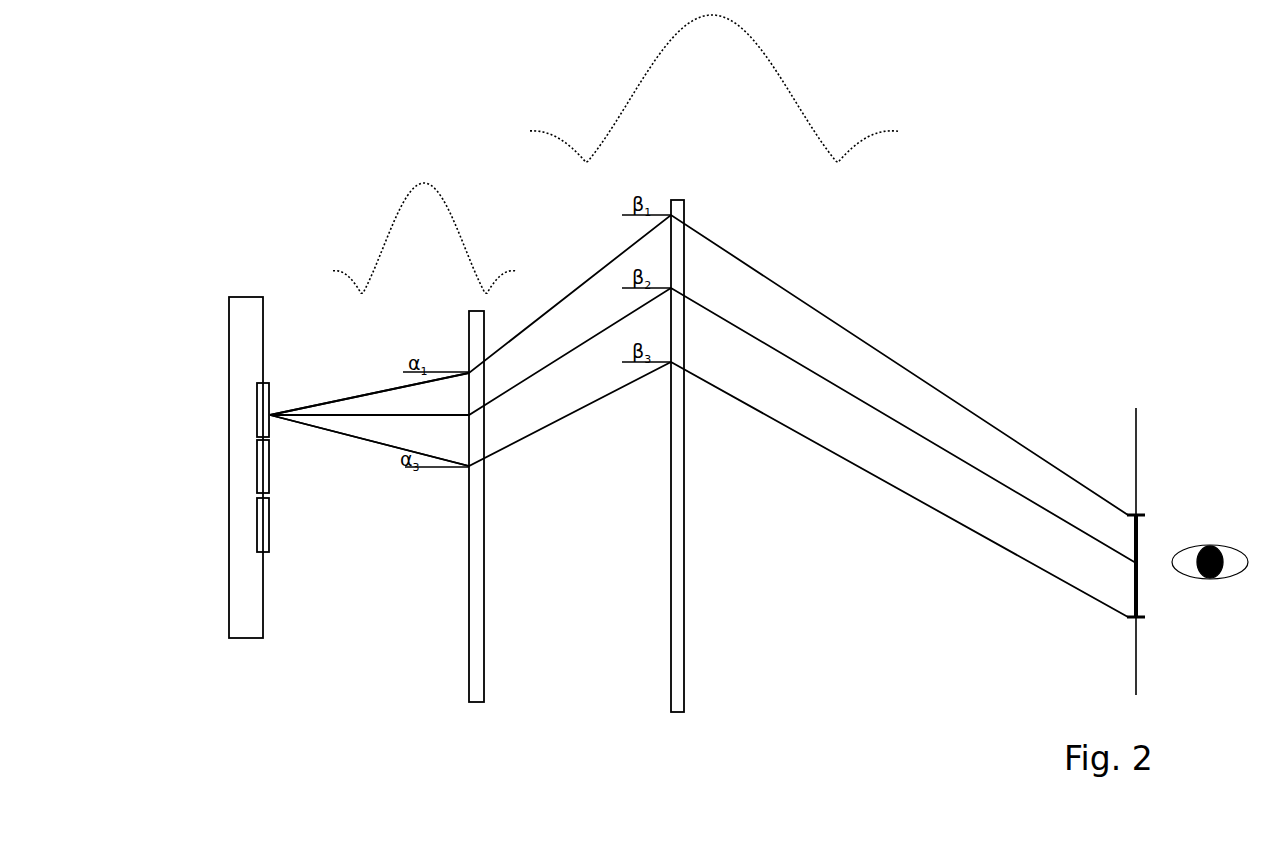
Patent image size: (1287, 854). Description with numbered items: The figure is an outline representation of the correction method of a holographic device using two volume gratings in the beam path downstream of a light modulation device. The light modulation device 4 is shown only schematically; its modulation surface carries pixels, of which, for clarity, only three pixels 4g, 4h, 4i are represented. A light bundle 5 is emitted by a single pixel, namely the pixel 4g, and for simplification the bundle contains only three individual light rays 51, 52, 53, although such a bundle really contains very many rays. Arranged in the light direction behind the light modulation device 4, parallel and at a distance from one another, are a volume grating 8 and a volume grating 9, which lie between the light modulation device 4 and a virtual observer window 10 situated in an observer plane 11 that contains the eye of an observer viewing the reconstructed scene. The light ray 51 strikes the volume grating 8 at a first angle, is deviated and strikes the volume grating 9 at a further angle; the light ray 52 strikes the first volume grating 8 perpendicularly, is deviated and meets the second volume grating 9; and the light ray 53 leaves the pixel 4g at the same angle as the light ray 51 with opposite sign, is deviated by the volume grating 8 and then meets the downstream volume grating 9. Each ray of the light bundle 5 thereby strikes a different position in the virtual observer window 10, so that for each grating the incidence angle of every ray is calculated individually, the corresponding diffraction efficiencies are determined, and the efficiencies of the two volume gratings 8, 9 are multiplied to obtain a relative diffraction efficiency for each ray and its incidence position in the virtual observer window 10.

The light modulation device 4 is at (248, 573).
The pixel 4g is at (263, 413).
The pixel 4h is at (262, 472).
The pixel 4i is at (263, 535).
The light bundle 5 is at (337, 386).
The light ray 51 is at (699, 365).
The light ray 52 is at (703, 425).
The light ray 53 is at (699, 489).
The volume grating 8 is at (477, 582).
The volume grating 9 is at (677, 582).
The virtual observer window 10 is at (1137, 535).
The observer plane 11 is at (1137, 470).